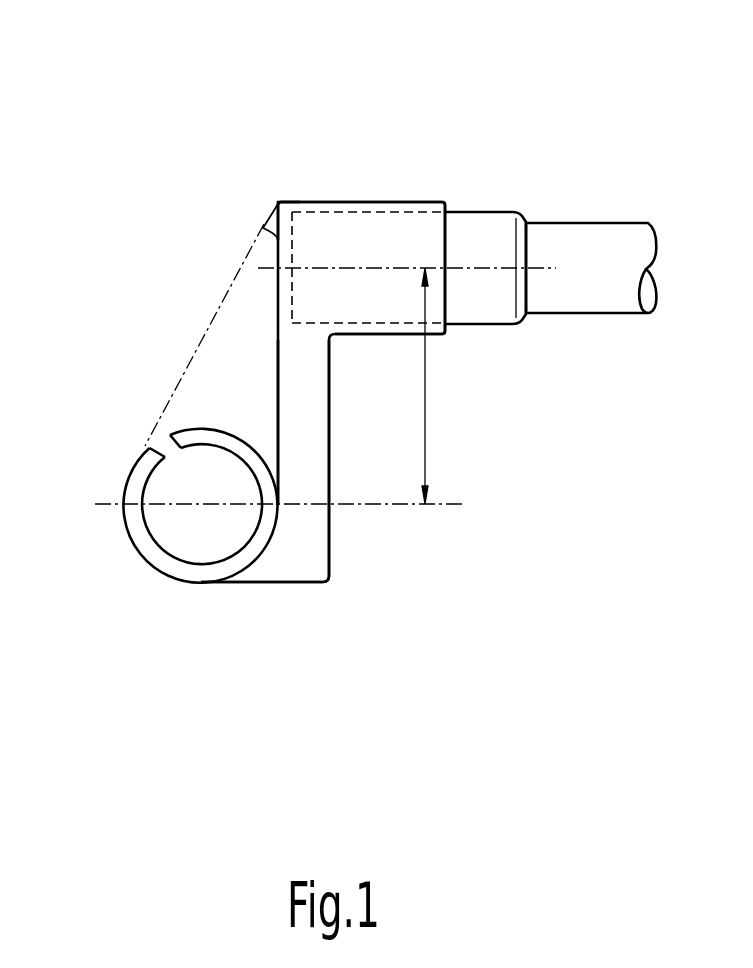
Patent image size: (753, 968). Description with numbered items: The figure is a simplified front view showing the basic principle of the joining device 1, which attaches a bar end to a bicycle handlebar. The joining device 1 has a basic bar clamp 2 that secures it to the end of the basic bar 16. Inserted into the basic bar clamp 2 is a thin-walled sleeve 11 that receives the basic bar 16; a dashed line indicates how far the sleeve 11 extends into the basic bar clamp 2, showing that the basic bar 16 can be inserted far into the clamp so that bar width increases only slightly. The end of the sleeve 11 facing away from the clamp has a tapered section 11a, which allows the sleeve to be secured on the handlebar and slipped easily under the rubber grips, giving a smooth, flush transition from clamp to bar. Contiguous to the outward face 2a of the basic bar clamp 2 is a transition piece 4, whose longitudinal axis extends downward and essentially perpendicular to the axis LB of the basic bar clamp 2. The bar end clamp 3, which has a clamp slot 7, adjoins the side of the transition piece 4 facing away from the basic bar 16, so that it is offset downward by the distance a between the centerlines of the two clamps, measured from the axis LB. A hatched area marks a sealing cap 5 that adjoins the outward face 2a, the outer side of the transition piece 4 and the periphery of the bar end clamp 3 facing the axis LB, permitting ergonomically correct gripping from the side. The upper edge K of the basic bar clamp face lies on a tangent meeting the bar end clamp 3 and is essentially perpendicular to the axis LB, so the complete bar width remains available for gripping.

The joining device 1 is at (291, 130).
The basic bar clamp 2 is at (340, 202).
The outward face 2a is at (262, 226).
The upper edge K is at (277, 202).
The sealing cap 5 is at (212, 333).
The clamp slot 7 is at (160, 420).
The bar end clamp 3 is at (130, 535).
The transition piece 4 is at (329, 392).
The sleeve 11 is at (479, 323).
The tapered section 11a is at (525, 222).
The basic bar 16 is at (583, 313).
The axis of basic bar clamp LB is at (368, 267).
The distance between centerlines a is at (436, 386).